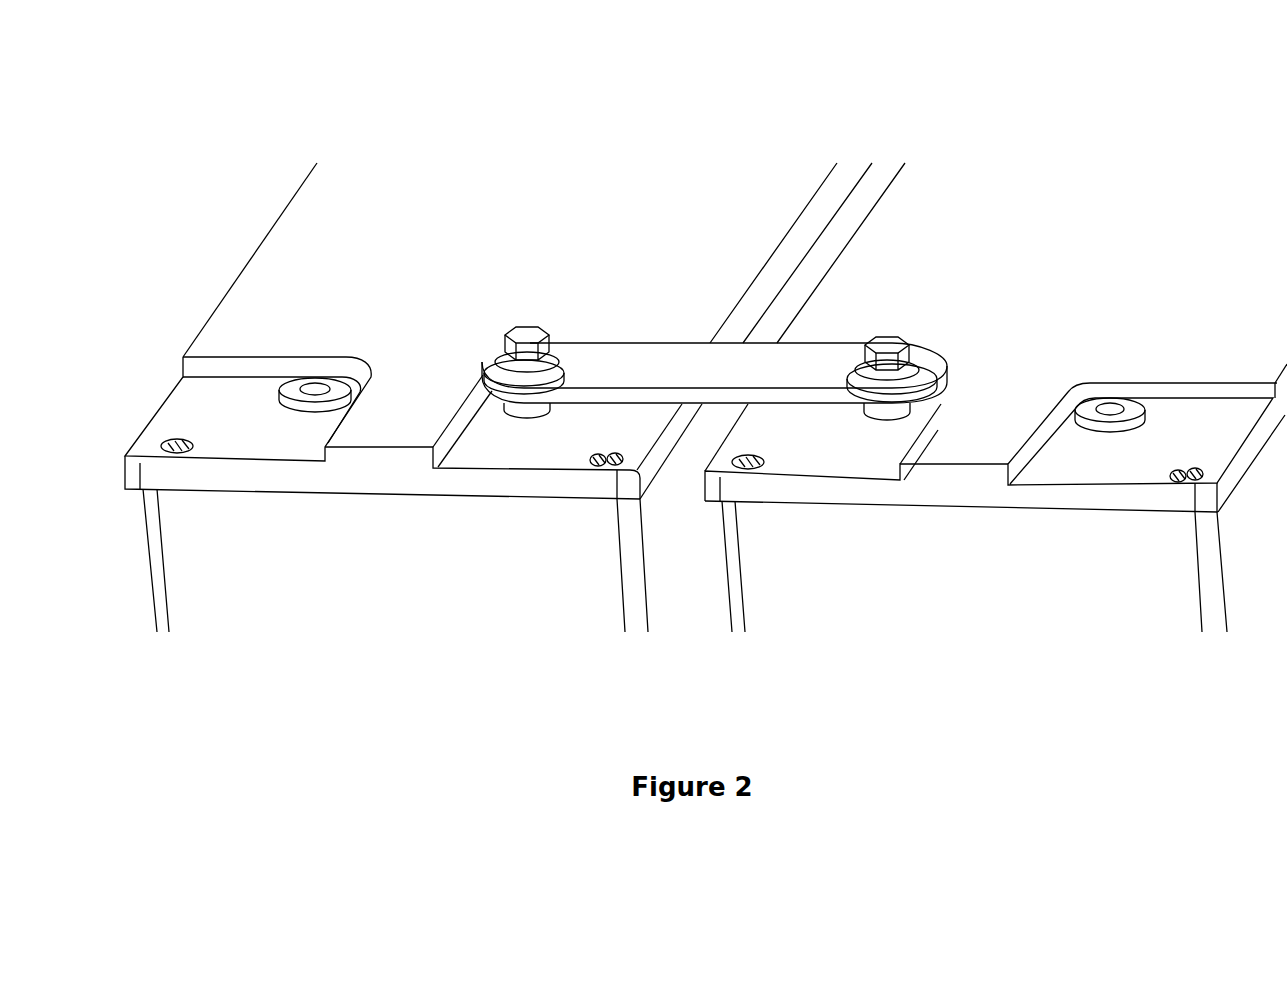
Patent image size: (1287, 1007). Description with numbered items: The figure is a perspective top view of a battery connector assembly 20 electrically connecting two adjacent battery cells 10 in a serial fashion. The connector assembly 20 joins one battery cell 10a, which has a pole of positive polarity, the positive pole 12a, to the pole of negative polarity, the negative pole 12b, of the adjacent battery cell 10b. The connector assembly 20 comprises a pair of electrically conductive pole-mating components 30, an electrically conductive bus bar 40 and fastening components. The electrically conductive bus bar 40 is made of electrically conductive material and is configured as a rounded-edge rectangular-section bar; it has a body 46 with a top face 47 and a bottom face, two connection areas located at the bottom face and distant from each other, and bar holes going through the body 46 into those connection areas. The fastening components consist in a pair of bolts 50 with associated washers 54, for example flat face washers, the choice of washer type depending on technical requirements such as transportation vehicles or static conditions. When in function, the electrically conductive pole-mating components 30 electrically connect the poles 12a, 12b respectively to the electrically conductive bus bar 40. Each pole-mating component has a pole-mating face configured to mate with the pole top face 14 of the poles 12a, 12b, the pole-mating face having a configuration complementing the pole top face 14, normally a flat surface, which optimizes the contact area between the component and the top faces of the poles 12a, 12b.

The battery cells 10 is at (274, 269).
The battery cell 10a is at (353, 257).
The adjacent battery cell 10b is at (1061, 257).
The positive pole 12a is at (528, 416).
The negative pole 12b is at (868, 418).
The pole top face 14 is at (292, 390).
The battery connector assembly 20 is at (740, 226).
The electrically conductive pole-mating components 30 is at (500, 398).
The electrically conductive bus bar 40 is at (714, 318).
The body 46 is at (714, 318).
The top face 47 is at (663, 345).
The bolts 50 is at (523, 336).
The washers 54 is at (560, 357).